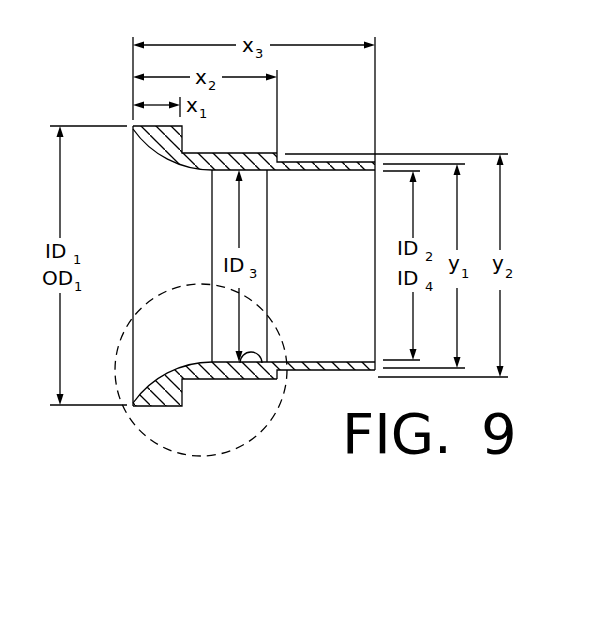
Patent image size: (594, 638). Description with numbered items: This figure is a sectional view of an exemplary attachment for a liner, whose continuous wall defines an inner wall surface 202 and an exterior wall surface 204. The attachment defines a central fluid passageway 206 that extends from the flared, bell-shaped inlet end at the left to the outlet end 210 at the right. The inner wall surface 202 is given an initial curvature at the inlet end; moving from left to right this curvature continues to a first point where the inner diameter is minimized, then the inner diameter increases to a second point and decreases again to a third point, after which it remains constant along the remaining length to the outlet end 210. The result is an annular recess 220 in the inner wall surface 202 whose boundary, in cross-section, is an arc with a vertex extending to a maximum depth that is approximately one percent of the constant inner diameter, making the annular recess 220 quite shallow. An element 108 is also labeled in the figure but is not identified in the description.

The flange 108 is at (133, 405).
The inner wall surface 202 is at (322, 172).
The exterior wall surface 204 is at (345, 157).
The central fluid passageway 206 is at (384, 220).
The outlet end 210 is at (375, 363).
The annular recess 220 is at (260, 358).